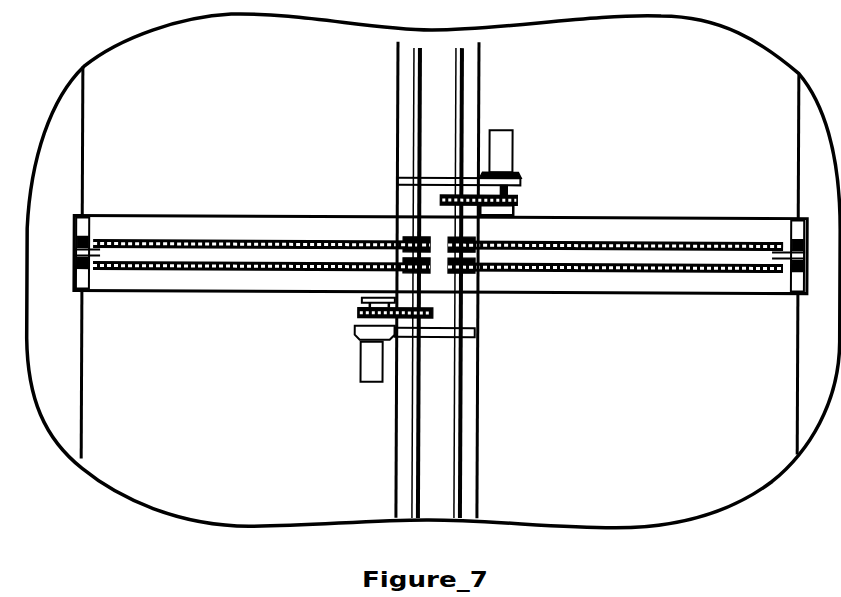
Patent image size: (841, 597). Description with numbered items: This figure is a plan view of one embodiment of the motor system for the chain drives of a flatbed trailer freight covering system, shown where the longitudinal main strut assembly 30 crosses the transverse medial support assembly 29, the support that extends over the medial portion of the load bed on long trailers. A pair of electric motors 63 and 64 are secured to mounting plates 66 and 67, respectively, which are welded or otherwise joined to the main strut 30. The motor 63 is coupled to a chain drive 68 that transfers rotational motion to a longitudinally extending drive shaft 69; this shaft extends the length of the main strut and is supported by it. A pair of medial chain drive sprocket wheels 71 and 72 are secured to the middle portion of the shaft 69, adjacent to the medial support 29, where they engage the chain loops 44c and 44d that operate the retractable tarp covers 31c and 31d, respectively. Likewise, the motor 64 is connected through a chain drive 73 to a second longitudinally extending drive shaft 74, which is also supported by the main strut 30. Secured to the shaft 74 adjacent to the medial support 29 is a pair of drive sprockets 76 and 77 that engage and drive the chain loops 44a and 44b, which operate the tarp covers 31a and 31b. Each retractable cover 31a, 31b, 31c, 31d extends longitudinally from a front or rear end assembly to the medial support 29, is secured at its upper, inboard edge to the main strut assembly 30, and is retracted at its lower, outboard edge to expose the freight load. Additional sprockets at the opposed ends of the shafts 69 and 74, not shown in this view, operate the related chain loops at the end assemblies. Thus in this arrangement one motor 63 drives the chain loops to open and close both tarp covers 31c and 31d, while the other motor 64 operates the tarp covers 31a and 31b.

The medial support assembly 29 is at (647, 294).
The main strut assembly 30 is at (479, 310).
The retractable load cover 31a is at (797, 212).
The retractable load cover 31b is at (797, 305).
The retractable load cover 31c is at (85, 198).
The retractable load cover 31d is at (82, 303).
The chain loop 44a is at (653, 242).
The chain loop 44b is at (733, 272).
The chain loop 44c is at (211, 239).
The chain loop 44d is at (193, 268).
The electric motor 63 is at (372, 362).
The electric motor 64 is at (511, 142).
The mounting plate 66 is at (473, 339).
The mounting plate 67 is at (443, 177).
The chain drive 68 is at (362, 313).
The drive shaft 69 is at (410, 213).
The medial chain drive sprocket wheel 71 is at (403, 240).
The medial chain drive sprocket wheel 72 is at (406, 272).
The chain drive 73 is at (520, 200).
The drive shaft 74 is at (462, 365).
The drive sprocket 76 is at (478, 240).
The drive sprocket 77 is at (477, 271).